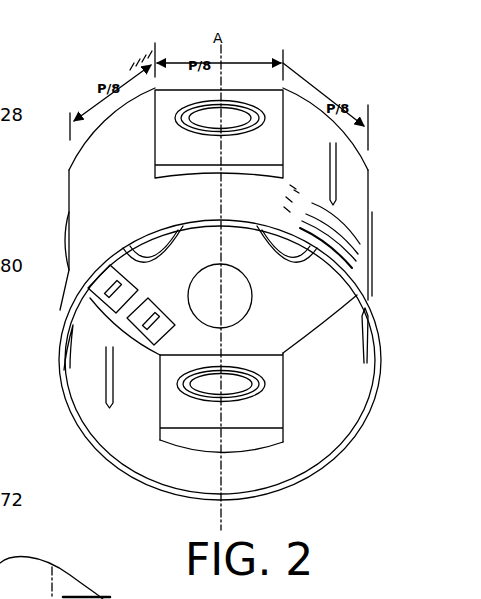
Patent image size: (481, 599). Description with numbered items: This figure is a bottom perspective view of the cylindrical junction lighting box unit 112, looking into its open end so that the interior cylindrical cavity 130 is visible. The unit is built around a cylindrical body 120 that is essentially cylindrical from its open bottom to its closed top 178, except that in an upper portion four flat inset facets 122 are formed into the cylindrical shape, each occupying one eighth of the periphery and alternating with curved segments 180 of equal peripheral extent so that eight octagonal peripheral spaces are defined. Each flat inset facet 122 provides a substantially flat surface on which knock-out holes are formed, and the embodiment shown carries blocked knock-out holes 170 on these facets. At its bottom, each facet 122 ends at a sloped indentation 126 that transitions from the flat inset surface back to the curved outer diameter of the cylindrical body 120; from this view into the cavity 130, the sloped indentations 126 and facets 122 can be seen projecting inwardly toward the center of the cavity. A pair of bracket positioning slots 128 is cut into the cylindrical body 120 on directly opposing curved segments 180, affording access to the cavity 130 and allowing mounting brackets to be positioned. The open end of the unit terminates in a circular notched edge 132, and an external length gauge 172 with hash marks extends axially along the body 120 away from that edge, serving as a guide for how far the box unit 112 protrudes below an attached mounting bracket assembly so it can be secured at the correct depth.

The cylindrical junction lighting box unit 112 is at (138, 84).
The cylindrical body 120 is at (340, 381).
The flat inset facets 122 is at (263, 138).
The sloped indentation 126 is at (190, 438).
The bracket positioning slots 128 is at (334, 172).
The interior cylindrical cavity 130 is at (331, 425).
The circular notched edge 132 is at (373, 413).
The blocked knock-out holes 170 is at (213, 120).
The external length gauge 172 is at (370, 266).
The closed top 178 is at (275, 316).
The curved segment 180 is at (116, 168).